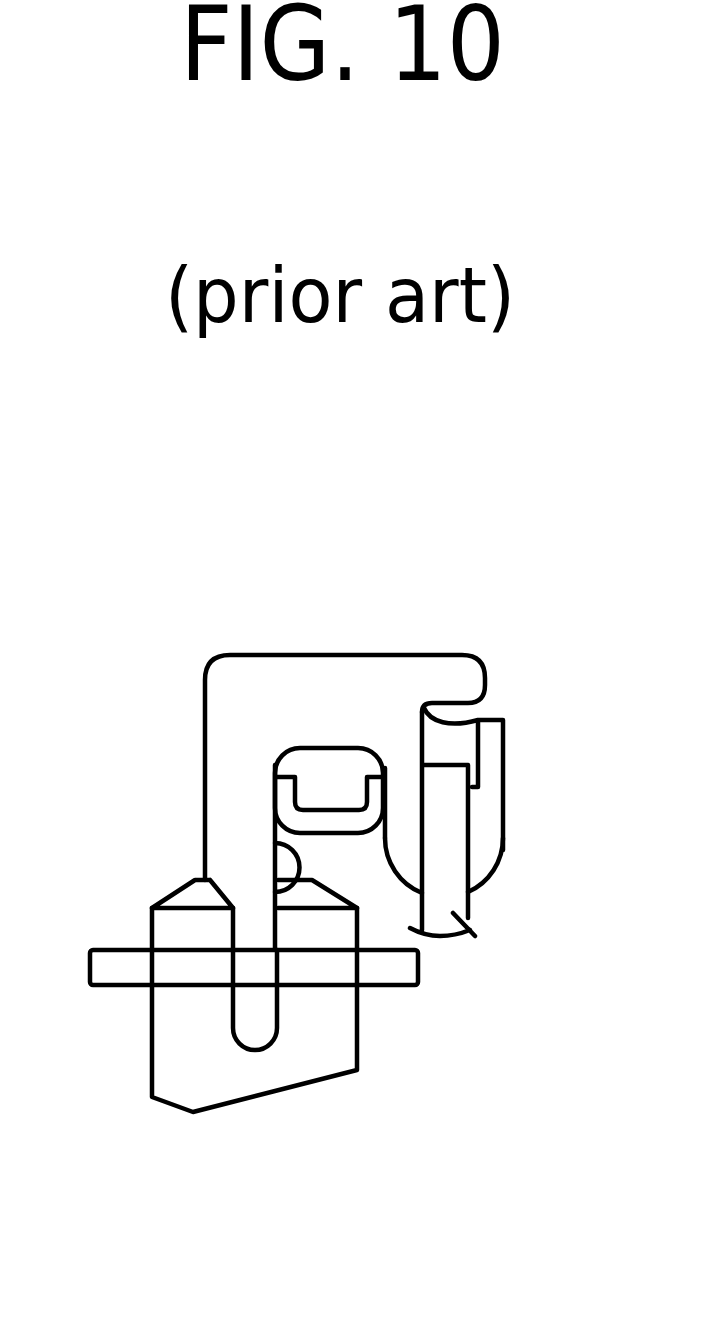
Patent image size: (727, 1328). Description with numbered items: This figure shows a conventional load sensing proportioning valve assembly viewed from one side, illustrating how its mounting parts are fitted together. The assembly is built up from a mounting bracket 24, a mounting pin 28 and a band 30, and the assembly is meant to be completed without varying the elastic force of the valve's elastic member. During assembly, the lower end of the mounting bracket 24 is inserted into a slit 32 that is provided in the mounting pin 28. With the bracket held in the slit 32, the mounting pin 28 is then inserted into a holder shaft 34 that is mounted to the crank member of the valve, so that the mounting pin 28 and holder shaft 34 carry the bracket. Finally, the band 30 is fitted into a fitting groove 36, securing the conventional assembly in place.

The mounting bracket 24 is at (313, 805).
The mounting pin 28 is at (318, 668).
The band 30 is at (470, 930).
The slit 32 is at (275, 892).
The holder shaft 34 is at (303, 1070).
The fitting groove 36 is at (503, 720).